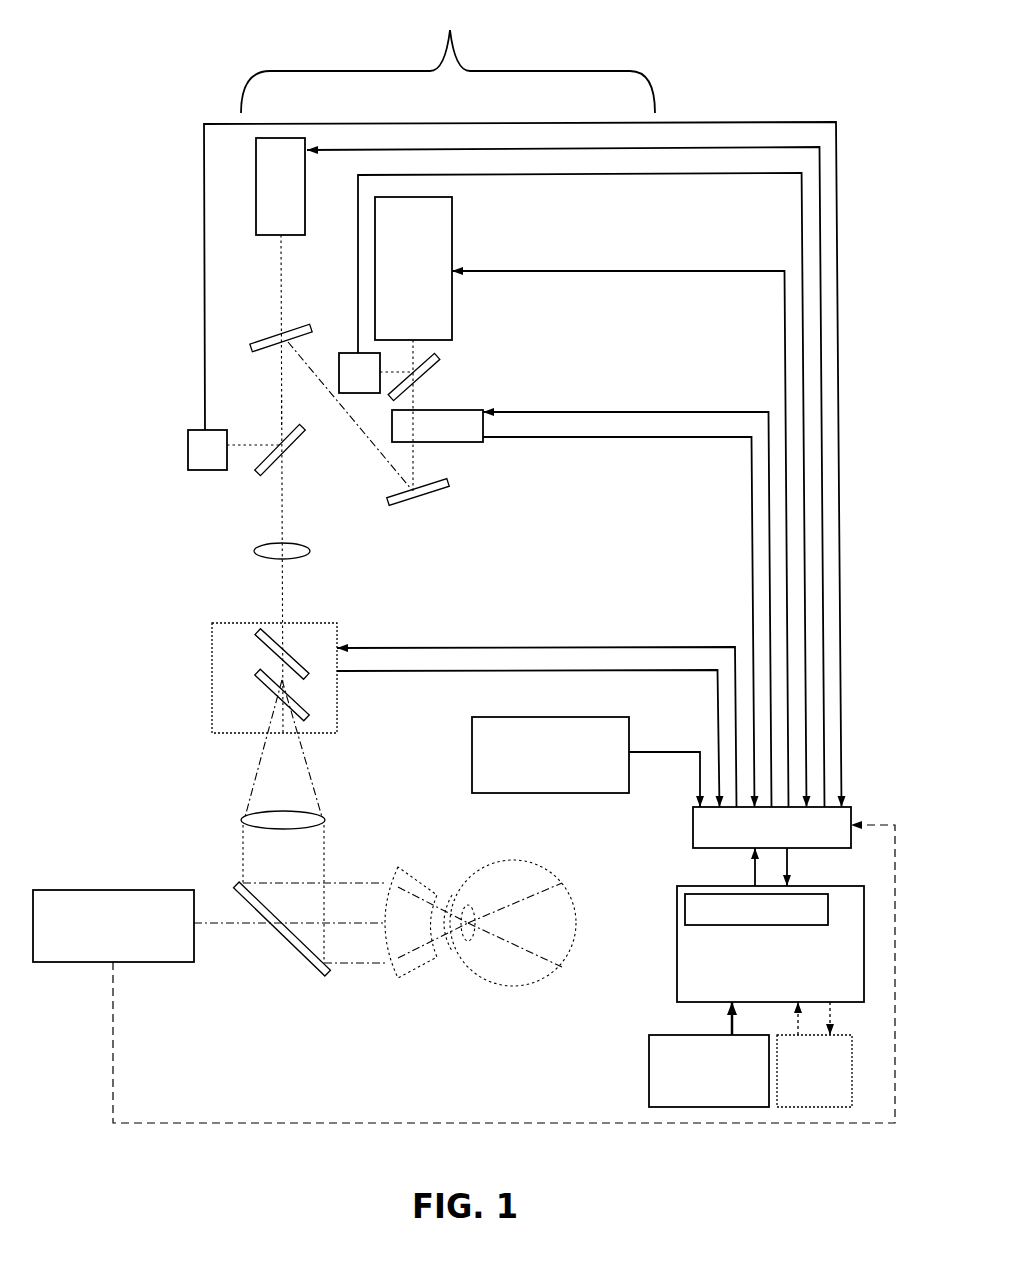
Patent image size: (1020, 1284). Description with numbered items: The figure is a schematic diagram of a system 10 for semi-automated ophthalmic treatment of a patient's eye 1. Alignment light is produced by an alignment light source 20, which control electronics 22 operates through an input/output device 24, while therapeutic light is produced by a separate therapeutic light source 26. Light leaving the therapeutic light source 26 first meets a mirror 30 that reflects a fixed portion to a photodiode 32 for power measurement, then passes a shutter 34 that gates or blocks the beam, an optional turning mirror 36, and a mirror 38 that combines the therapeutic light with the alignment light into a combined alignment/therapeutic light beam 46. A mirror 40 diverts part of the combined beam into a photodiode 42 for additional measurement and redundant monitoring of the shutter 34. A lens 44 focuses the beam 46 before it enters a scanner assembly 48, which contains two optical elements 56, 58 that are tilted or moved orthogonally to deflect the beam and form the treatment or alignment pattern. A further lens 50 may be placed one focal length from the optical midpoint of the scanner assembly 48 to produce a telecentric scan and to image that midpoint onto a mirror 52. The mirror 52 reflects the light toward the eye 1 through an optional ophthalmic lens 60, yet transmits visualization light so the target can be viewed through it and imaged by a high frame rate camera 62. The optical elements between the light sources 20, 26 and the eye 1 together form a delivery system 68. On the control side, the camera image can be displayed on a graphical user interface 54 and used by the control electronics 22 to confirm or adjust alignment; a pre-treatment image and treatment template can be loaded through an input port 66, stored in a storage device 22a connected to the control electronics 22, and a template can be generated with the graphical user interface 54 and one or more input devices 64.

The patient's eye 1 is at (530, 862).
The system 10 is at (716, 90).
The alignment light source 20 is at (256, 176).
The control electronics 22 is at (746, 997).
The storage device 22a is at (810, 924).
The input/output device 24 is at (799, 841).
The therapeutic light source 26 is at (402, 299).
The mirror 30 is at (437, 361).
The photodiode 32 is at (342, 354).
The shutter 34 is at (476, 442).
The mirror 36 is at (442, 495).
The mirror 38 is at (271, 334).
The mirror 40 is at (295, 441).
The photodiode 42 is at (188, 447).
The lens 44 is at (256, 553).
The combined alignment/therapeutic light beam 46 is at (281, 410).
The scanner assembly 48 is at (212, 677).
The lens 50 is at (325, 818).
The mirror 52 is at (297, 950).
The graphical user interface 54 is at (803, 1096).
The optical element 56 is at (297, 655).
The optical element 58 is at (305, 703).
The ophthalmic lens 60 is at (417, 873).
The camera 62 is at (102, 949).
The input device 64 is at (539, 782).
The input port 66 is at (698, 1096).
The delivery system 68 is at (448, 57).